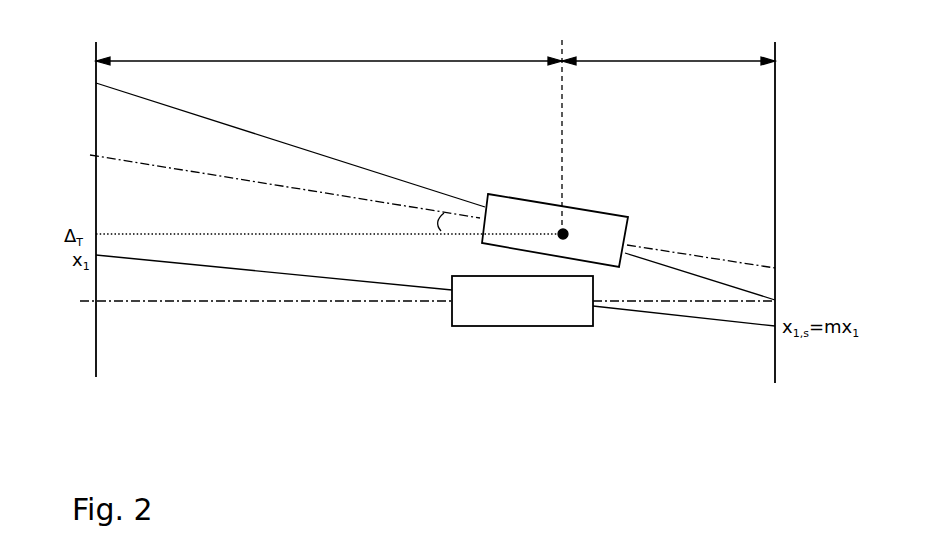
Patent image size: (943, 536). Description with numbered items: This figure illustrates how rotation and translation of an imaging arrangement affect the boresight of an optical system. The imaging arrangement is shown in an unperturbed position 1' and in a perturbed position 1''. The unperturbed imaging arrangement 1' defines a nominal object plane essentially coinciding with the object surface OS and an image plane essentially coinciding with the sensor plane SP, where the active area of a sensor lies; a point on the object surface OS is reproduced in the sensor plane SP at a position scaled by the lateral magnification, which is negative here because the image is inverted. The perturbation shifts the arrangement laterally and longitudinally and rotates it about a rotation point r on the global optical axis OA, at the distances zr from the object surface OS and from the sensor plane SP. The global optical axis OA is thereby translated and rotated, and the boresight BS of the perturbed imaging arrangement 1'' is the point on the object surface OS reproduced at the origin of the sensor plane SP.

The imaging arrangement in unperturbed position 1' is at (514, 344).
The imaging arrangement in perturbed position 1'' is at (554, 190).
The rotation point r is at (563, 234).
The object surface OS is at (96, 340).
The sensor plane SP is at (775, 355).
The boresight BS is at (416, 187).
The global optical axis OA is at (187, 169).
The distances z_r,o and z_r,s zr is at (435, 135).